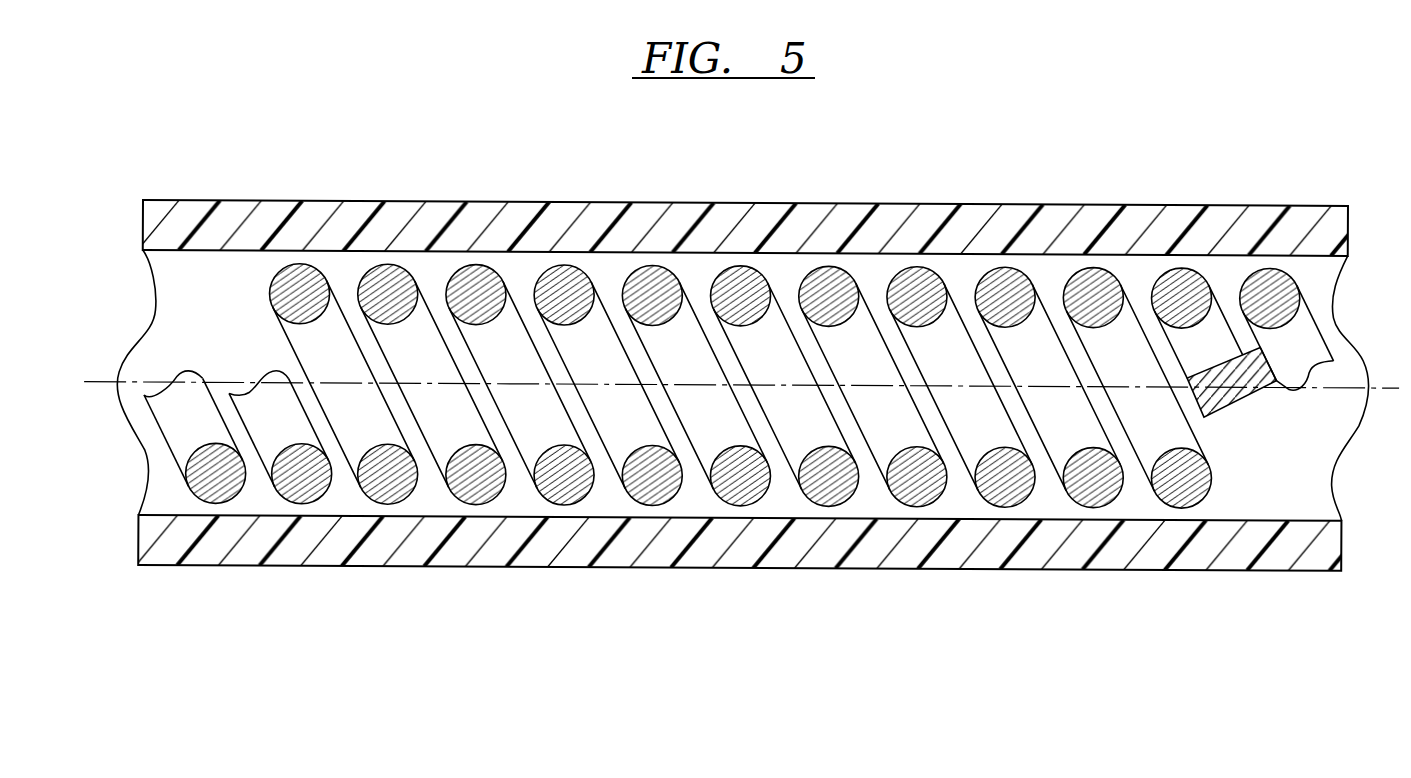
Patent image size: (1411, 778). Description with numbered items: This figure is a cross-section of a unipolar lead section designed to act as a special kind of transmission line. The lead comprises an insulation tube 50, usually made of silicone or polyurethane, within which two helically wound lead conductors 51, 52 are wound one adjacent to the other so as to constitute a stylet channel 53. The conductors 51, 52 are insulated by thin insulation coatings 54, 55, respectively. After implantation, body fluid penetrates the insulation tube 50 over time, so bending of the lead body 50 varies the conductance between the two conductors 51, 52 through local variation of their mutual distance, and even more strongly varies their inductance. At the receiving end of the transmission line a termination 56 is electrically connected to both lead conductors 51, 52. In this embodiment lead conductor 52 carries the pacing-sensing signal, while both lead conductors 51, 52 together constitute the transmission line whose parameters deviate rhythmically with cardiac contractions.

The insulation tube 50 is at (267, 232).
The lead conductor 51 is at (182, 432).
The lead conductor 52 is at (275, 418).
The stylet channel 53 is at (487, 400).
The insulation coating 54 is at (202, 503).
The insulation coating 55 is at (323, 495).
The termination 56 is at (1224, 386).